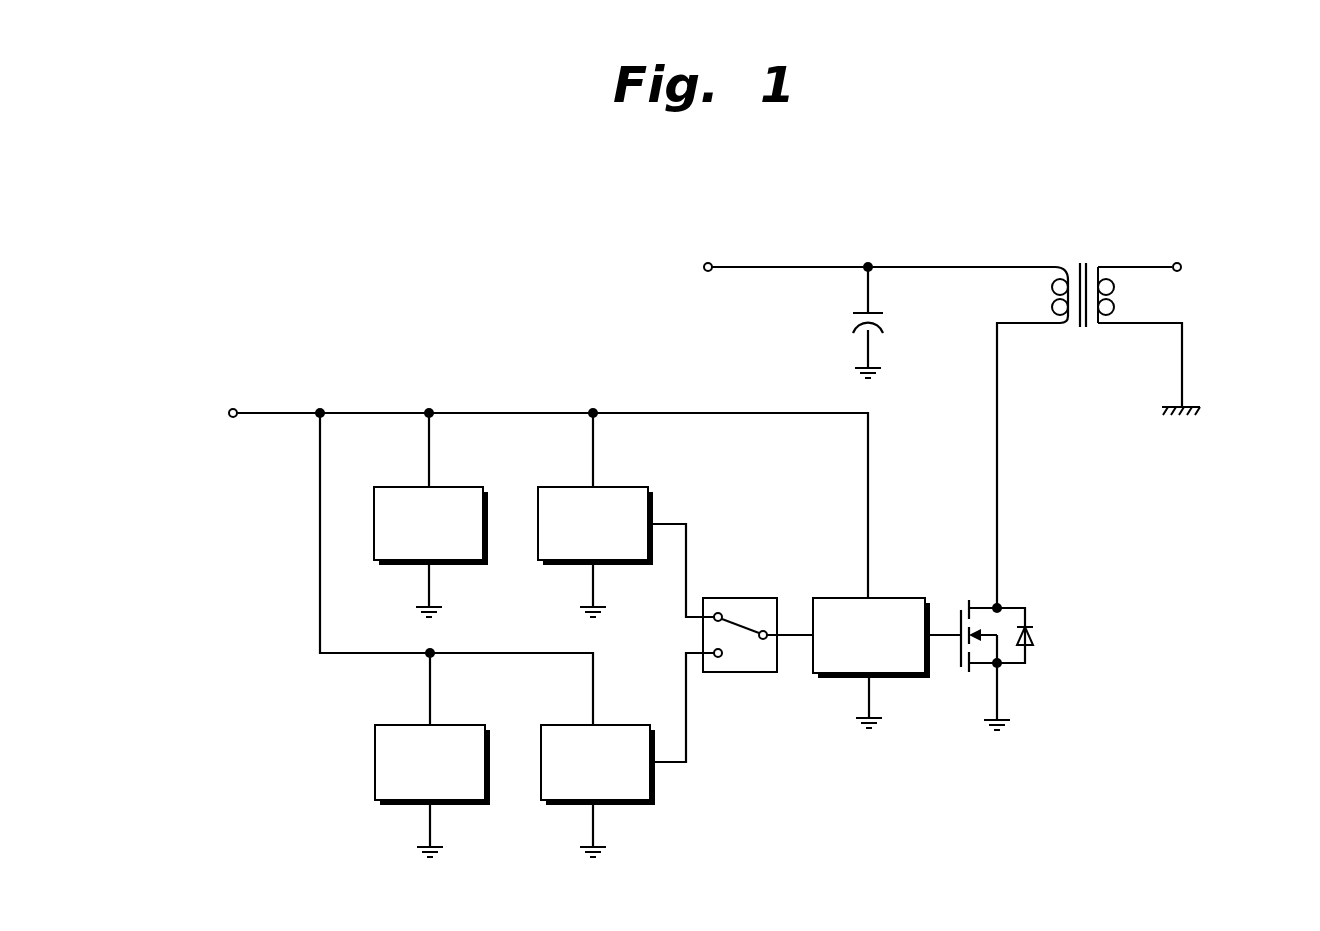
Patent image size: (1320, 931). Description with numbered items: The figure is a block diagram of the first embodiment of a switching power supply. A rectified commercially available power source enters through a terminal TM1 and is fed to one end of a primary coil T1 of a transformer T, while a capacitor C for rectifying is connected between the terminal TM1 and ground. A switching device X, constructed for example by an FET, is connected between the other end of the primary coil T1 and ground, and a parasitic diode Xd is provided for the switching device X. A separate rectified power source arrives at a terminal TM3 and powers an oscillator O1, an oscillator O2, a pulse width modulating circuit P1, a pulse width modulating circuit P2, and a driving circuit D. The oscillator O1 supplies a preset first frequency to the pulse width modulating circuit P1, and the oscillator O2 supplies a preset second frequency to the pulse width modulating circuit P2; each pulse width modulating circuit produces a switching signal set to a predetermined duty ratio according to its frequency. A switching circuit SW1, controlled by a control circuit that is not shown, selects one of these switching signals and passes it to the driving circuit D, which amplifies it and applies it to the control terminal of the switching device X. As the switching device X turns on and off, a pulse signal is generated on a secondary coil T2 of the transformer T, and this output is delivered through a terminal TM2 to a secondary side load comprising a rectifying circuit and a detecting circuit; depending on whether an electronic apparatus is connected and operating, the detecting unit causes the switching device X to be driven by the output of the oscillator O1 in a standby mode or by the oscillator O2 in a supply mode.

The terminal TM1 is at (700, 268).
The terminal TM2 is at (1183, 267).
The terminal TM3 is at (224, 414).
The capacitor C is at (844, 322).
The transformer T is at (1080, 289).
The primary coil T1 is at (1062, 332).
The secondary coil T2 is at (1098, 332).
The oscillator O1 is at (462, 485).
The oscillator O2 is at (462, 722).
The pulse width modulating circuit P1 is at (625, 485).
The pulse width modulating circuit P2 is at (627, 722).
The switching circuit SW1 is at (736, 595).
The driving circuit D is at (899, 595).
The switching device X is at (958, 685).
The parasitic diode Xd is at (1033, 633).